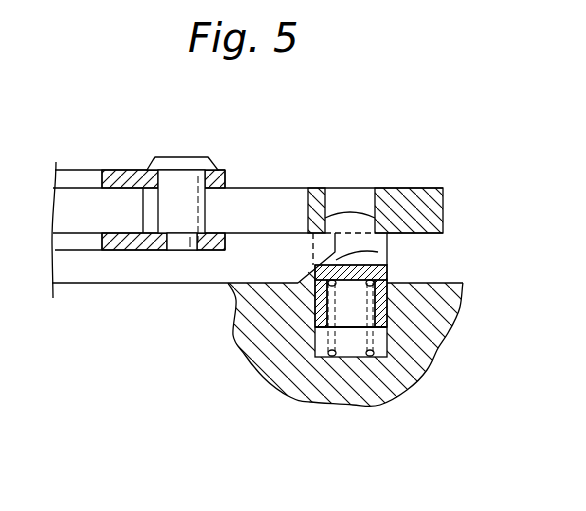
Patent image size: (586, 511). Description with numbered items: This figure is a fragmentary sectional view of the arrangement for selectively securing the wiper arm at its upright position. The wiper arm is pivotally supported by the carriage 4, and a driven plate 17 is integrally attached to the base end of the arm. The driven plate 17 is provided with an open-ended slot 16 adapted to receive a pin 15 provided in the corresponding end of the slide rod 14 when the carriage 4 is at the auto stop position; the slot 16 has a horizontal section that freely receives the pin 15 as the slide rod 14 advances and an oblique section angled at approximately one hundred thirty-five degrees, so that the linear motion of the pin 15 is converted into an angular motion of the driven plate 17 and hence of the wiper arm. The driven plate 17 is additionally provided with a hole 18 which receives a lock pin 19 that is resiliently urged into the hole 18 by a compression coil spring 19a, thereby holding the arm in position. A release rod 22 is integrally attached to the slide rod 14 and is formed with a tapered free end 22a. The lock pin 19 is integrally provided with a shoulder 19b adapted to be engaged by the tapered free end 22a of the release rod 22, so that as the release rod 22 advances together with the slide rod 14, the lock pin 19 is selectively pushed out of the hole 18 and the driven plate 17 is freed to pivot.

The carriage 4 is at (458, 283).
The slide rod 14 is at (83, 177).
The pin 15 is at (207, 210).
The open-ended slot 16 is at (243, 241).
The driven plate 17 is at (423, 190).
The hole 18 is at (333, 198).
The lock pin 19 is at (352, 211).
The compression coil spring 19a is at (335, 337).
The shoulder 19b is at (377, 255).
The release rod 22 is at (253, 278).
The tapered free end 22a is at (388, 250).